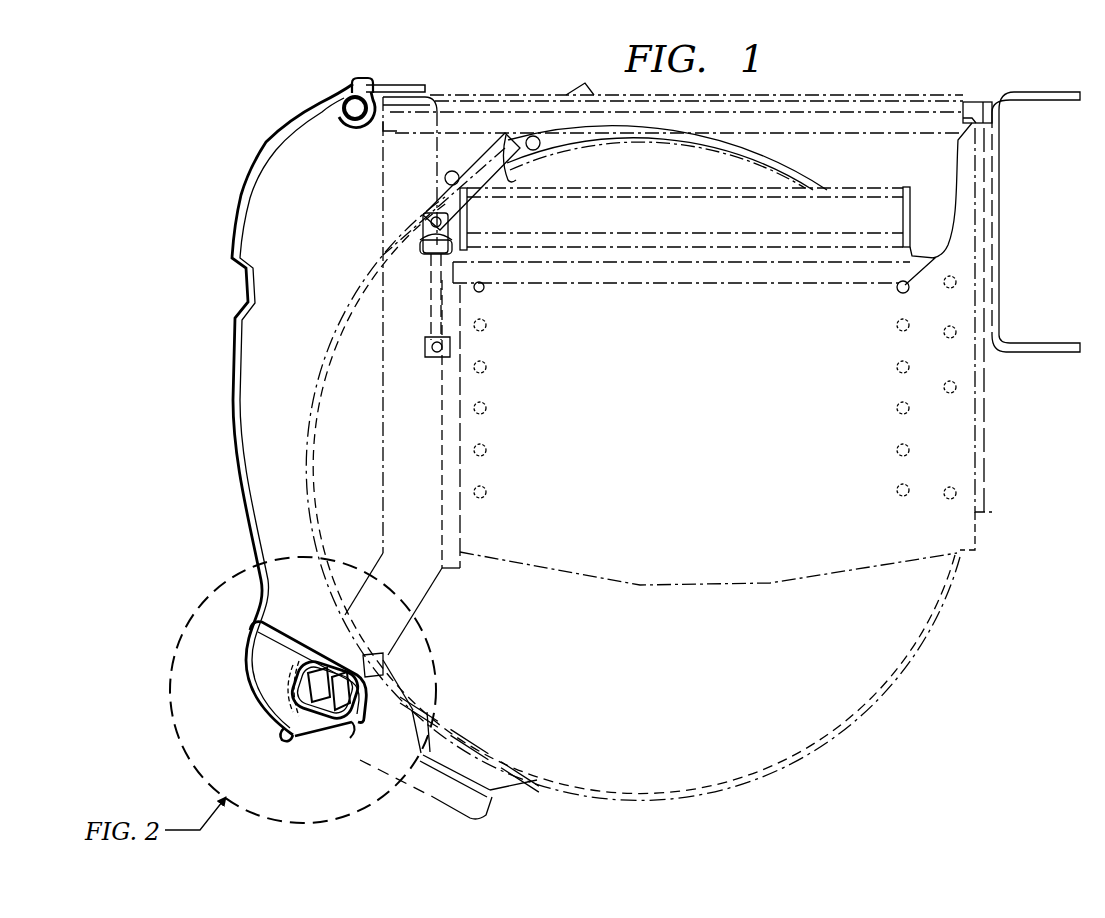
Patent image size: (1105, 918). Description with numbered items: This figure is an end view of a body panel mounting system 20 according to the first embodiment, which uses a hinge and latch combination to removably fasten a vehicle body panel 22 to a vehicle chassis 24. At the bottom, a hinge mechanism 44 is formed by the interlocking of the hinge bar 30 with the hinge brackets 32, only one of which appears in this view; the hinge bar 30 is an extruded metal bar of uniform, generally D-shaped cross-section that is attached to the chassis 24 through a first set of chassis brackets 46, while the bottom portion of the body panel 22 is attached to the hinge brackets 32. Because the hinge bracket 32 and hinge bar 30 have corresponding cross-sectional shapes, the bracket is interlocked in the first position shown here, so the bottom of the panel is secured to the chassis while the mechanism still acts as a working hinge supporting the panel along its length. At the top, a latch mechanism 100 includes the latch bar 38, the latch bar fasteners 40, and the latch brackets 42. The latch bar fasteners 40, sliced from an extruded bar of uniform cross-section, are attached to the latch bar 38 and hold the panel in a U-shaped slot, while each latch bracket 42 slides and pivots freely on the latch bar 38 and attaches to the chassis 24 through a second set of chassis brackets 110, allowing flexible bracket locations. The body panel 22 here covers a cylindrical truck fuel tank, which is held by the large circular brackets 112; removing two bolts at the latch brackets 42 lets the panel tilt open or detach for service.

The body panel mounting system 20 is at (292, 416).
The vehicle body panel 22 is at (228, 372).
The vehicle chassis 24 is at (1077, 92).
The hinge bar 30 is at (328, 726).
The hinge bracket 32 is at (297, 627).
The latch bar 38 is at (358, 124).
The latch bar fastener 40 is at (337, 130).
The latch bracket 42 is at (405, 82).
The hinge mechanism 44 is at (288, 744).
The first set of chassis brackets 46 is at (358, 735).
The latch mechanism 100 is at (338, 210).
The second set of chassis brackets 110 is at (438, 110).
The large circular brackets 112 is at (785, 772).